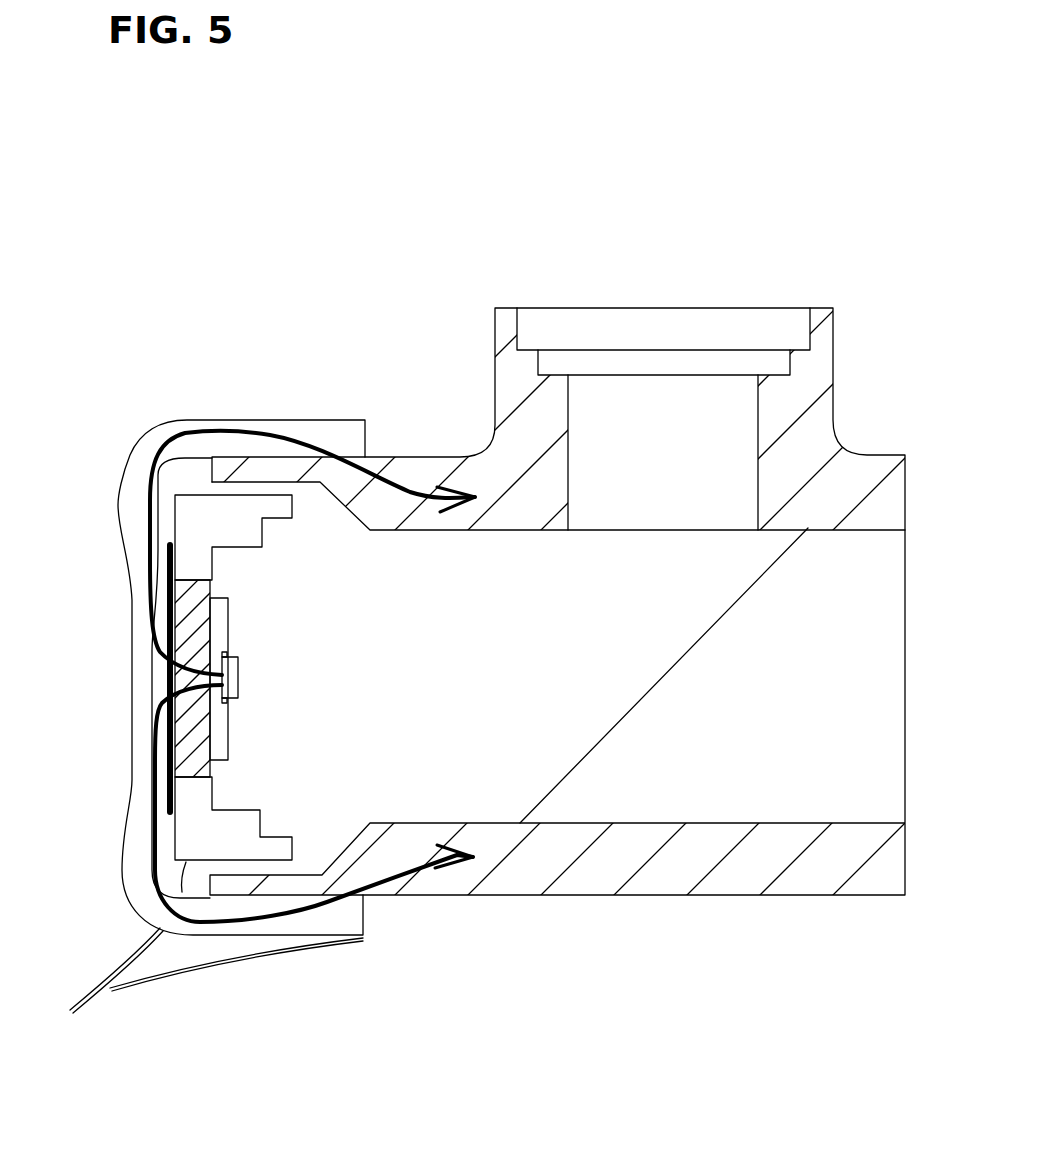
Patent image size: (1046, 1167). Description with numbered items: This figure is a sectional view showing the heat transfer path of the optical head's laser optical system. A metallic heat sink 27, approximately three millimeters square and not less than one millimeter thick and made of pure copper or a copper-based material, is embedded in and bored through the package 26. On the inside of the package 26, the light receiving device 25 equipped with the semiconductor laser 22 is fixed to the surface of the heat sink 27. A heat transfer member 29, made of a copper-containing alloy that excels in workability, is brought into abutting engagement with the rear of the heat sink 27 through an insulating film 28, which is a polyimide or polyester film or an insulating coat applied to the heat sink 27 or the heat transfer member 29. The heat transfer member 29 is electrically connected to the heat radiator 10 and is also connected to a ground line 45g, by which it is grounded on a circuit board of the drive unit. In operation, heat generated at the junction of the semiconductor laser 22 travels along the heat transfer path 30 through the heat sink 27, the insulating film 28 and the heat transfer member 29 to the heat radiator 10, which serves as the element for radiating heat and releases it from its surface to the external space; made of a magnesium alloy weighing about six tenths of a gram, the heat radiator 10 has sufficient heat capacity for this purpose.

The heat radiator 10 is at (665, 883).
The semiconductor laser 22 is at (238, 680).
The light receiving device 25 is at (223, 628).
The package 26 is at (248, 523).
The heat sink 27 is at (197, 732).
The insulating film 28 is at (220, 674).
The heat transfer member 29 is at (157, 427).
The heat transfer path 30 is at (258, 433).
The ground line 45g is at (193, 963).